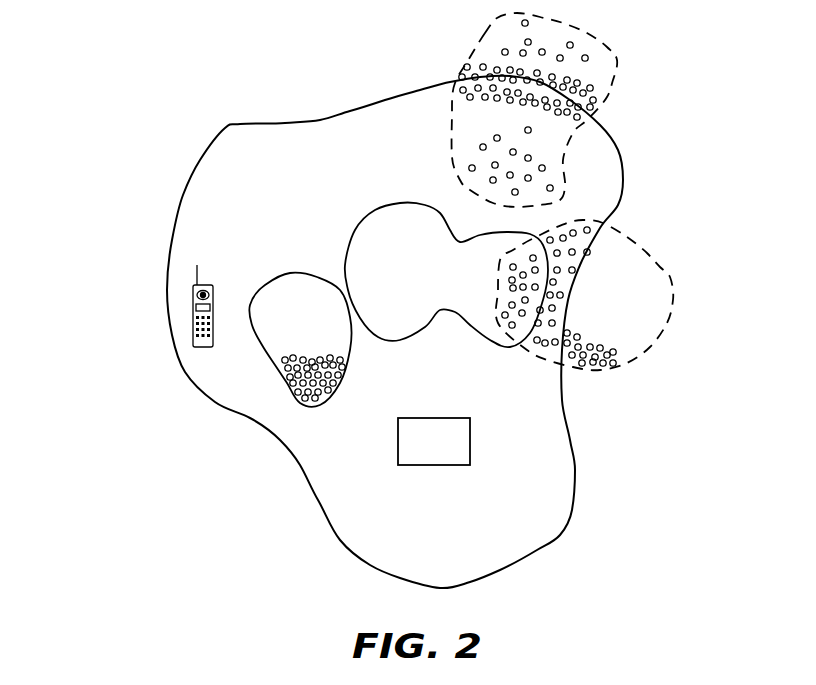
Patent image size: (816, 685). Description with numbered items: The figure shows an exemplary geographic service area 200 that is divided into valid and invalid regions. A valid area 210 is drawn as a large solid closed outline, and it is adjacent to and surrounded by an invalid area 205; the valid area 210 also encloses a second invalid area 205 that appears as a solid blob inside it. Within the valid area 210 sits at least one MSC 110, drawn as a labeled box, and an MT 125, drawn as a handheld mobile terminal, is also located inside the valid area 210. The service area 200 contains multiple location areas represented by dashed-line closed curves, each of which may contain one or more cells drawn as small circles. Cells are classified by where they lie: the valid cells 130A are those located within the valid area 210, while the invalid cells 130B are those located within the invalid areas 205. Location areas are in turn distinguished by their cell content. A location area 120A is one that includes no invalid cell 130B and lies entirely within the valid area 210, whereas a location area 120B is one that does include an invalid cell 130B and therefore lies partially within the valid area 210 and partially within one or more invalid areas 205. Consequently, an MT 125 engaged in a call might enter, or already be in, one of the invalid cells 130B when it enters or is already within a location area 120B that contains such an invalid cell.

The geographic service area 200 is at (103, 150).
The valid area 210 is at (269, 216).
The invalid area 205 is at (415, 298).
The location area without invalid cell 120A is at (318, 307).
The location area with invalid cell 120B is at (468, 68).
The valid cells 130A is at (301, 393).
The invalid cells 130B is at (606, 84).
The MT 125 is at (203, 348).
The MSC 110 is at (436, 466).